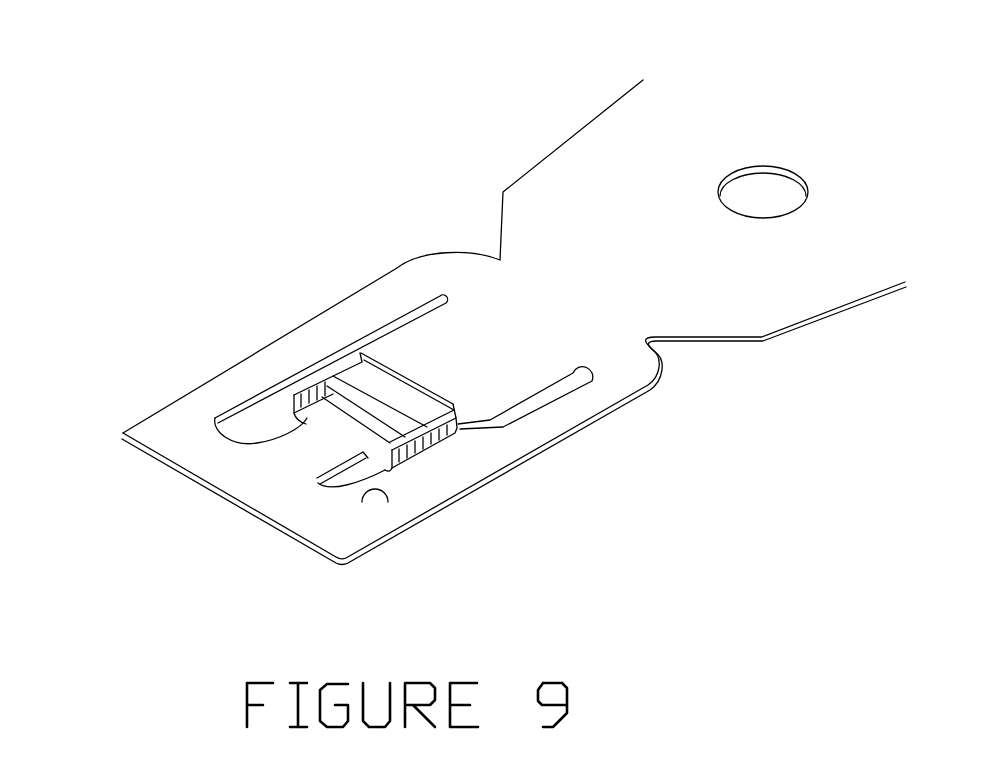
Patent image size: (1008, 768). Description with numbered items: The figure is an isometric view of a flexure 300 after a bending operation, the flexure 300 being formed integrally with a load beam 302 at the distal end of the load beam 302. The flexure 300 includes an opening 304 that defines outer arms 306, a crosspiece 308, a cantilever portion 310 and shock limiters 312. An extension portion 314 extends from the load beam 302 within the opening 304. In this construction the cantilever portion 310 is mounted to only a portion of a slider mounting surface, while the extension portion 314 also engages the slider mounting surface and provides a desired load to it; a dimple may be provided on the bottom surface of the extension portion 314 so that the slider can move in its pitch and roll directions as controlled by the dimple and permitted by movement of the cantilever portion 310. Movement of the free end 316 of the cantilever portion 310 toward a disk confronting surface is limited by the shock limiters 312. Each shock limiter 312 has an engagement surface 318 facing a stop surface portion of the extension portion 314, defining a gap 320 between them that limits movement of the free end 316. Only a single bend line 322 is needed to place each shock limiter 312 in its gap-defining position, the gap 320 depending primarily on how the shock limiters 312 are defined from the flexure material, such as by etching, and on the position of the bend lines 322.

The flexure 300 is at (277, 312).
The load beam 302 is at (601, 137).
The opening 304 is at (367, 483).
The outer arms 306 is at (213, 397).
The crosspiece 308 is at (255, 483).
The cantilever portion 310 is at (313, 458).
The shock limiters 312 is at (293, 389).
The extension portion 314 is at (433, 333).
The free end 316 is at (355, 428).
The engagement surfaces 318 is at (362, 380).
The gap 320 is at (373, 384).
The bend line 322 is at (305, 429).